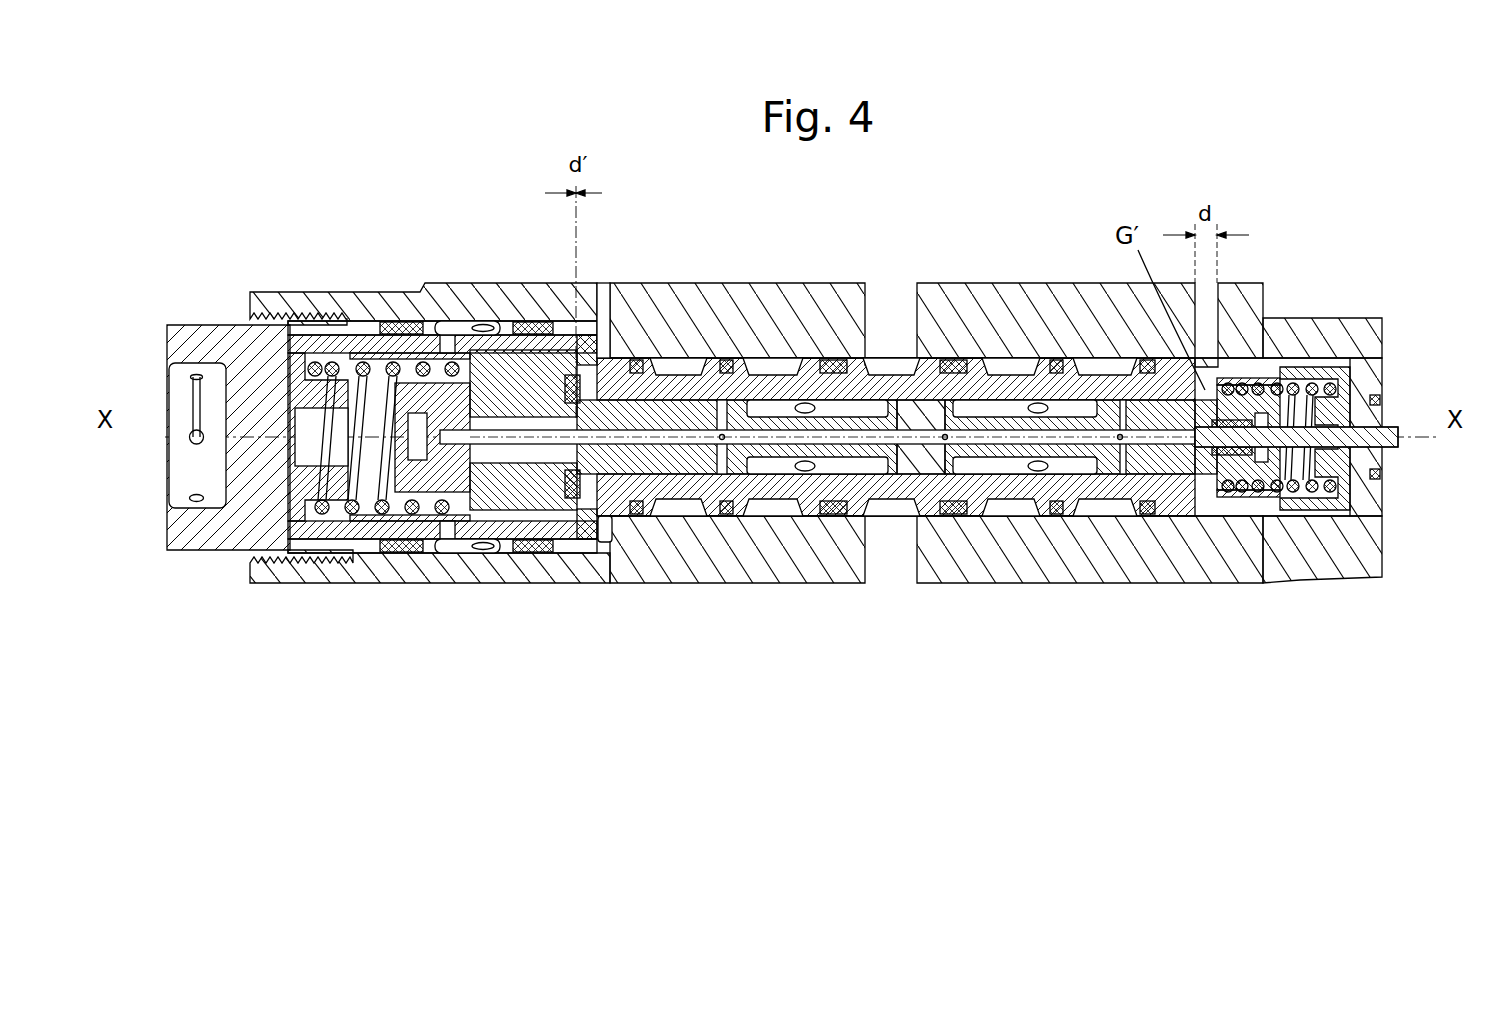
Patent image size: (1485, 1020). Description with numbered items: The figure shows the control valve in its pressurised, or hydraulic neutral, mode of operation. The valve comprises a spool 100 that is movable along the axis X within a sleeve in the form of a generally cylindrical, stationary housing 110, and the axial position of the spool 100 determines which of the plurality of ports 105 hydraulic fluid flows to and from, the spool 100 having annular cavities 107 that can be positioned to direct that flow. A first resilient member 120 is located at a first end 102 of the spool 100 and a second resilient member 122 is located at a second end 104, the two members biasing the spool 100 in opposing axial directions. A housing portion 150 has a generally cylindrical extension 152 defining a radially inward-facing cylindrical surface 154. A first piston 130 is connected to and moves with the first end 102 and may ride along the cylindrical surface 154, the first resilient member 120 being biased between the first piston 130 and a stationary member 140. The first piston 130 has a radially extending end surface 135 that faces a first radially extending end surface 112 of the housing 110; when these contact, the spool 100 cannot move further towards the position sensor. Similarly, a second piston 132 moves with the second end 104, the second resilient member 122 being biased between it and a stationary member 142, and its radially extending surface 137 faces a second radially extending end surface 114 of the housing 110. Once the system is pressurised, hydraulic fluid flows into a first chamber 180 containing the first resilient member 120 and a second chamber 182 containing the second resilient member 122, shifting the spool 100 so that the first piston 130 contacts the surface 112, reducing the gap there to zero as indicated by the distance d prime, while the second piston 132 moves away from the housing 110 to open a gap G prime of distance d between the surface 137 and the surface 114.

The spool 100 is at (922, 420).
The first end of the spool 102 is at (537, 453).
The second end of the spool 104 is at (1177, 462).
The ports 105 is at (806, 470).
The annular cavities 107 is at (767, 467).
The housing 110 is at (975, 390).
The first radially extending end surface of the housing 112 is at (576, 493).
The second radially extending end surface of the housing 114 is at (1202, 483).
The first resilient member 120 is at (370, 505).
The second resilient member 122 is at (1330, 507).
The first piston 130 is at (457, 473).
The second piston 132 is at (1240, 395).
The radially extending end surface of the first piston 135 is at (577, 487).
The radially extending surface of the second piston 137 is at (1250, 498).
The stationary member 140 is at (1377, 443).
The stationary member 142 is at (1340, 390).
The housing portion 150 is at (255, 390).
The cylindrical extension 152 is at (430, 535).
The cylindrical surface 154 is at (407, 360).
The first chamber 180 is at (375, 360).
The second chamber 182 is at (1287, 487).